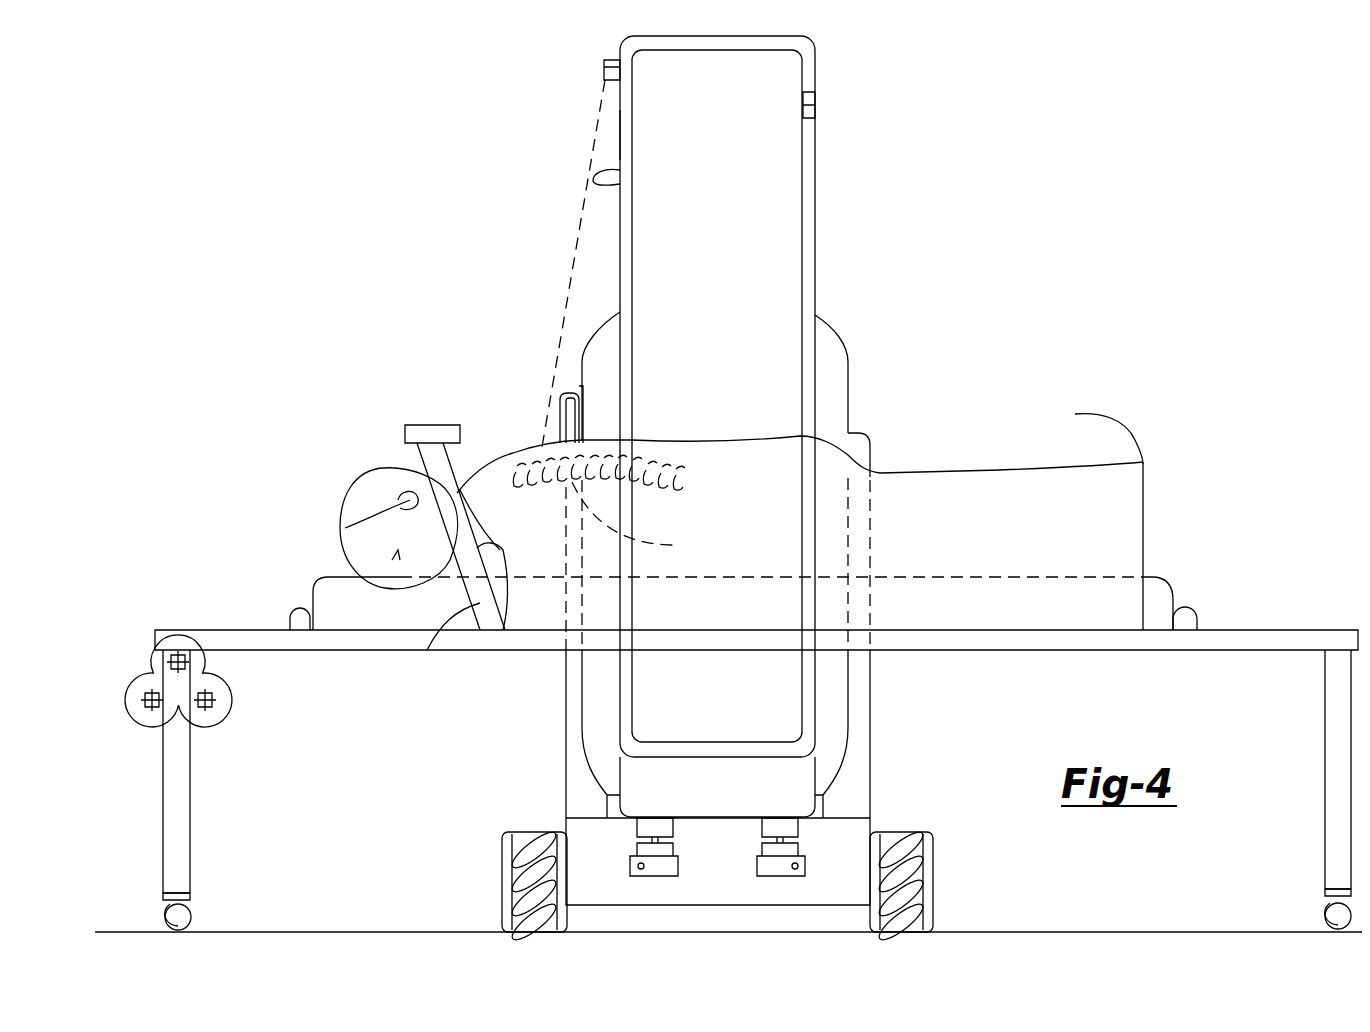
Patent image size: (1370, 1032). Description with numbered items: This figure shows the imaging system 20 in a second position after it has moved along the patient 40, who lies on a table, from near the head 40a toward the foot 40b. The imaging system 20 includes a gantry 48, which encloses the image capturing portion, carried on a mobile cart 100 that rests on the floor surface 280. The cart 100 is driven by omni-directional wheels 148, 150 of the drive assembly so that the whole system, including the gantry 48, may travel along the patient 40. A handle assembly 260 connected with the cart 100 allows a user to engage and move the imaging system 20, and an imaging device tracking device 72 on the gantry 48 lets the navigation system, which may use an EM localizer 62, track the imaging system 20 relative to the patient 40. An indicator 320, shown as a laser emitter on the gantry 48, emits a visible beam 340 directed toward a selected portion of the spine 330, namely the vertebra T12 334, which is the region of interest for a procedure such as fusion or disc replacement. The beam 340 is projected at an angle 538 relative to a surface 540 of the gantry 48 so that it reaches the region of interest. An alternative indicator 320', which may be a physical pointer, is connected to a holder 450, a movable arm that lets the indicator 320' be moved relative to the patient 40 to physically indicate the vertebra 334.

The imaging system 20 is at (1006, 130).
The patient 40 is at (676, 513).
The head 40a is at (345, 525).
The foot 40b is at (1089, 513).
The gantry 48 is at (620, 39).
The EM localizer 62 is at (129, 680).
The imaging device tracking device 72 is at (815, 105).
The cart 100 is at (566, 694).
The omni-directional wheel 148 is at (533, 826).
The omni-directional wheel 150 is at (938, 835).
The handle assembly 260 is at (554, 388).
The surface 280 is at (1244, 929).
The indicator 320 is at (564, 77).
The indicator 320' is at (416, 490).
The spine 330 is at (527, 450).
The vertebra T12 334 is at (642, 520).
The beam 340 is at (577, 243).
The holder 450 is at (465, 605).
The angle 538 is at (594, 183).
The surface 540 is at (619, 132).